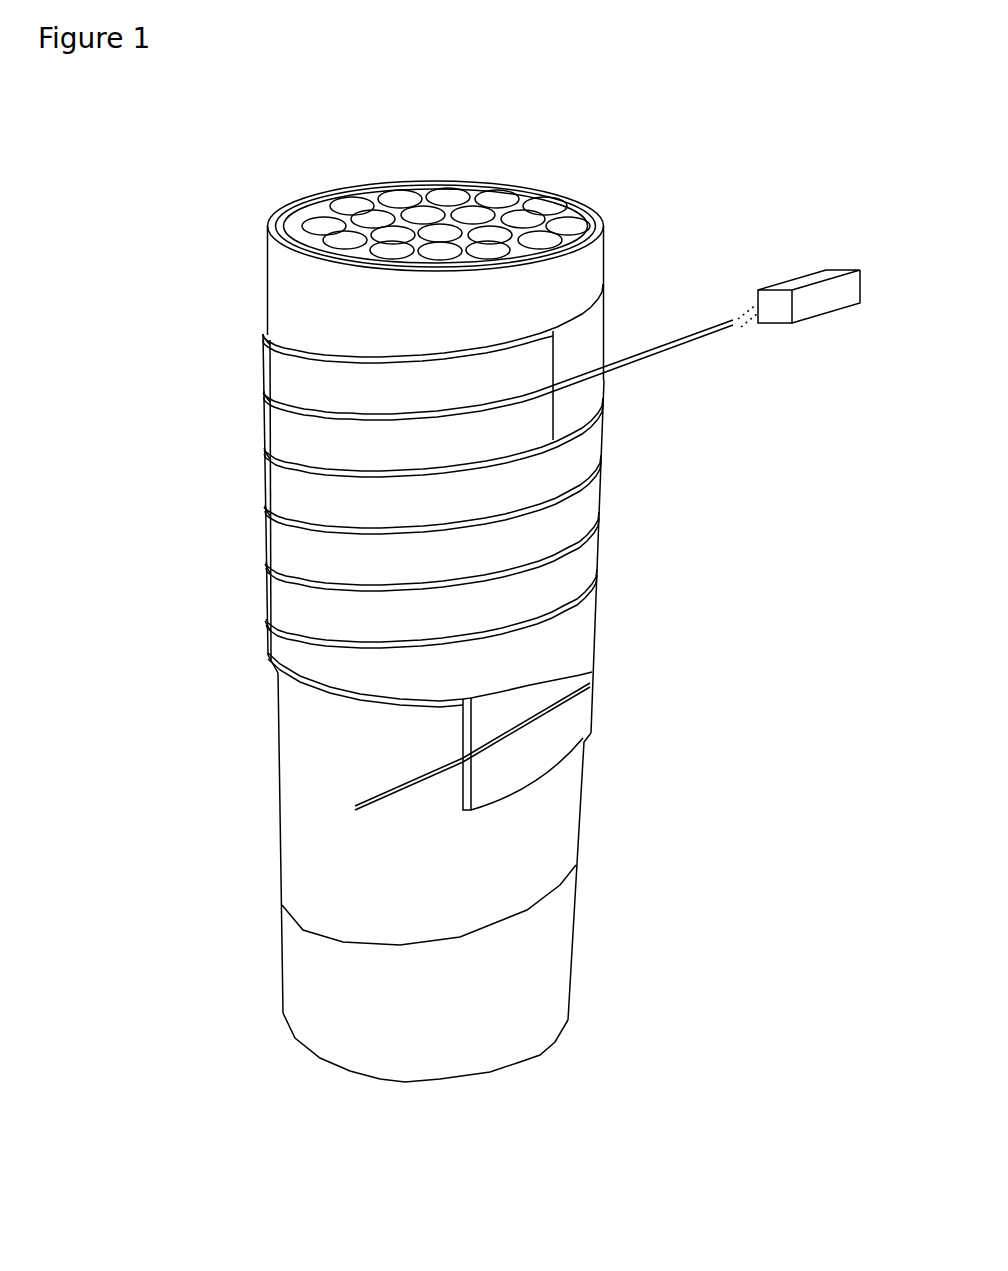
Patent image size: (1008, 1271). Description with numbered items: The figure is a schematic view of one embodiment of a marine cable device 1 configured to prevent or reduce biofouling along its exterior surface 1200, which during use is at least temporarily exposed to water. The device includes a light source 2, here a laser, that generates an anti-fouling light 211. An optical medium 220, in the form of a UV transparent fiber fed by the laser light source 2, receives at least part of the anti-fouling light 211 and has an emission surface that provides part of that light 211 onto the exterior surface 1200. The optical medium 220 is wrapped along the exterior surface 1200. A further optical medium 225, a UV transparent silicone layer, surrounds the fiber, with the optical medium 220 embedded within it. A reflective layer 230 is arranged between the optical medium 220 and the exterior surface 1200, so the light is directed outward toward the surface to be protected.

The marine cable device 1 is at (238, 149).
The exterior surface 1200 is at (267, 283).
The optical medium 220 is at (645, 360).
The light source 2 is at (827, 271).
The anti-fouling light 211 is at (746, 334).
The further optical medium 225 is at (592, 709).
The reflective layer 230 is at (547, 832).